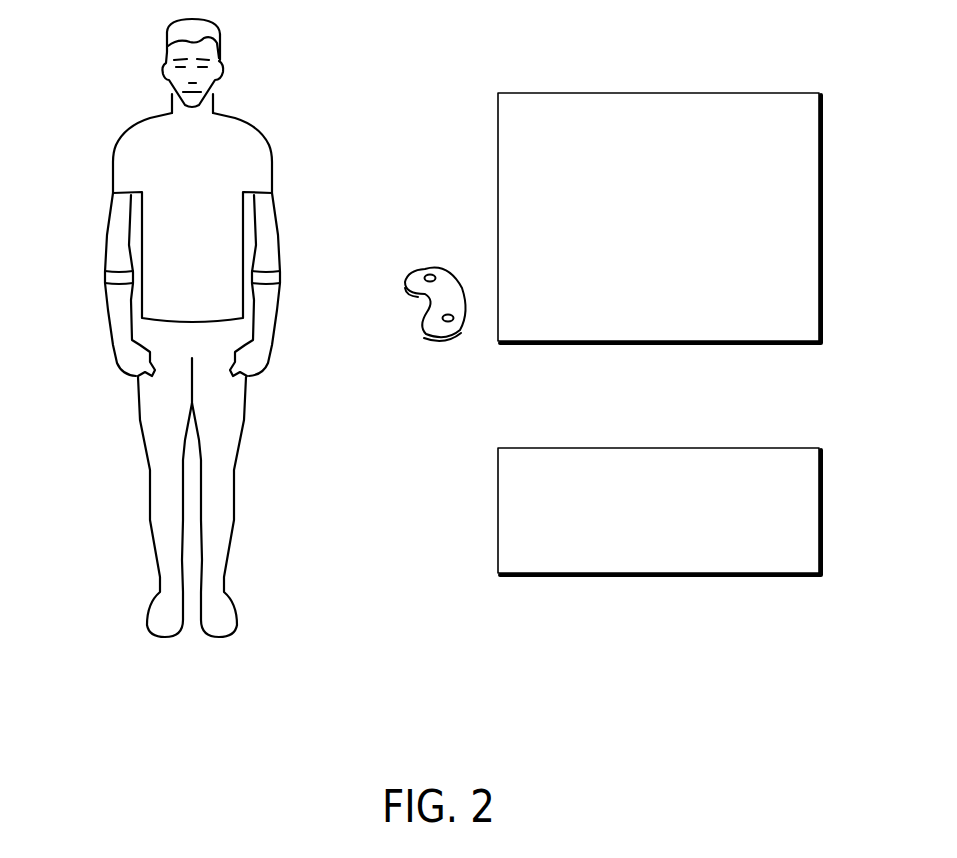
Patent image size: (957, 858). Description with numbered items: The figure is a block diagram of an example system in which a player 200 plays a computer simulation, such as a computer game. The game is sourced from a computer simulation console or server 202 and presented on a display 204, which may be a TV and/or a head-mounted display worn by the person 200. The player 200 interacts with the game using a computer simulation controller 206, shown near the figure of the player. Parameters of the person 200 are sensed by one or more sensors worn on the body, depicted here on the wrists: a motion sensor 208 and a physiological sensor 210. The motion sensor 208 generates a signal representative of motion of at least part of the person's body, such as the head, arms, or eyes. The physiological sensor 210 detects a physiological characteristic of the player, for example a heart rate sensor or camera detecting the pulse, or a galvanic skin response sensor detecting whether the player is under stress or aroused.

The player 200 is at (273, 158).
The computer simulation console or server 202 is at (823, 510).
The display 204 is at (823, 217).
The computer simulation controller 206 is at (420, 272).
The motion sensor 208 is at (105, 277).
The physiological sensor 210 is at (281, 277).